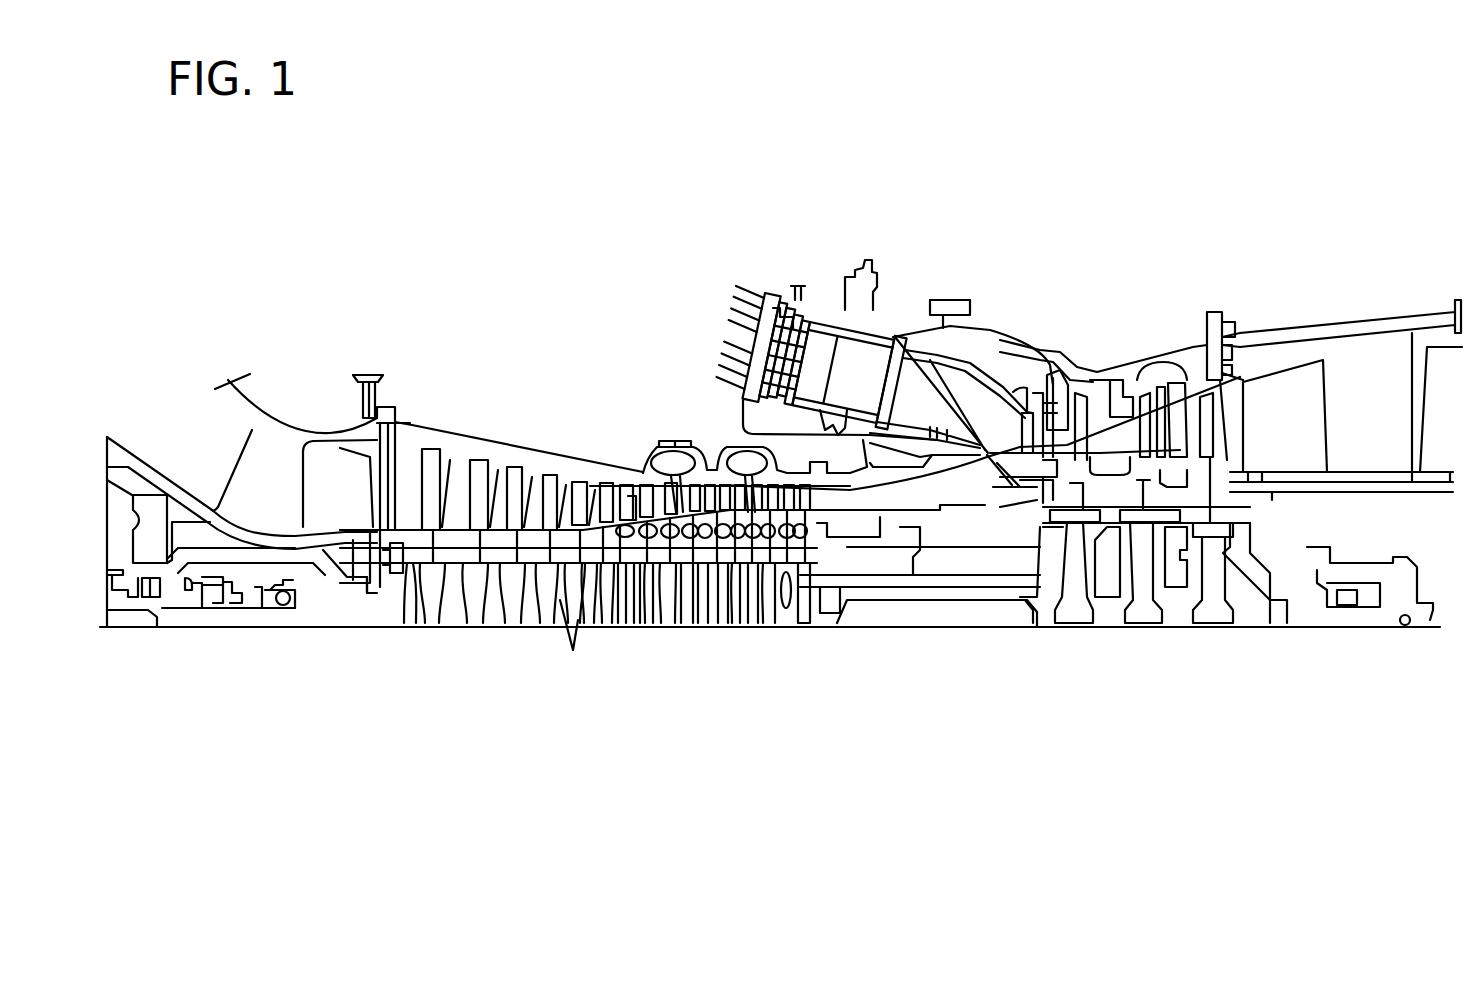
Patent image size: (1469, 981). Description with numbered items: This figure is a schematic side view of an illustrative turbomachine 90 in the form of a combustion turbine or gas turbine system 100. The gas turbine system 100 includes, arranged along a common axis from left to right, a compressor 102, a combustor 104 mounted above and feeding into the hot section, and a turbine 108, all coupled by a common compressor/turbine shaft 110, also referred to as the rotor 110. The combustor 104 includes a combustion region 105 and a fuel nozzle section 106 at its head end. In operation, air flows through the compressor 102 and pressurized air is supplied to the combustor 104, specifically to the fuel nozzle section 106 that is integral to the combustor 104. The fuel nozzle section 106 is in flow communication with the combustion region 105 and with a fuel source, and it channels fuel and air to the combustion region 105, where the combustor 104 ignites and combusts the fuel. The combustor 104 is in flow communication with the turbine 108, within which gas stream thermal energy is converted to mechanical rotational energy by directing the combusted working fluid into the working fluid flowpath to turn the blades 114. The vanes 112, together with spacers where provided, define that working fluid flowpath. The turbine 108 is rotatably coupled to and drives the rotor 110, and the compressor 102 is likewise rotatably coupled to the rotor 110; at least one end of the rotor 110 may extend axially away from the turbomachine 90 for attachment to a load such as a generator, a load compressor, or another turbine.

The turbomachine 90 is at (1140, 210).
The gas turbine system 100 is at (285, 243).
The compressor 102 is at (515, 468).
The combustor 104 is at (920, 221).
The combustion region 105 is at (856, 355).
The fuel nozzle section 106 is at (780, 292).
The turbine 108 is at (1178, 383).
The common compressor/turbine shaft 110 is at (404, 568).
The vanes 112 is at (1180, 420).
The blades 114 is at (1145, 432).